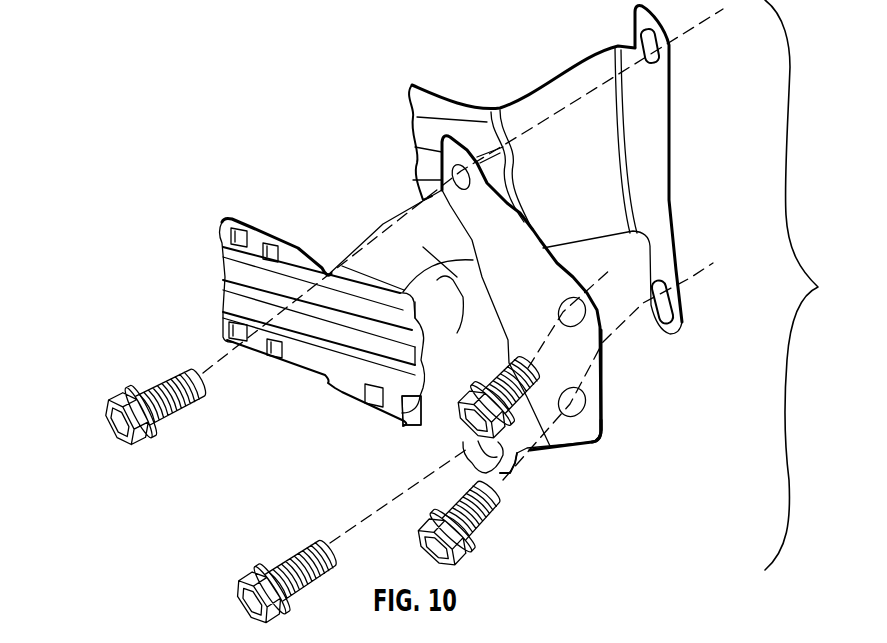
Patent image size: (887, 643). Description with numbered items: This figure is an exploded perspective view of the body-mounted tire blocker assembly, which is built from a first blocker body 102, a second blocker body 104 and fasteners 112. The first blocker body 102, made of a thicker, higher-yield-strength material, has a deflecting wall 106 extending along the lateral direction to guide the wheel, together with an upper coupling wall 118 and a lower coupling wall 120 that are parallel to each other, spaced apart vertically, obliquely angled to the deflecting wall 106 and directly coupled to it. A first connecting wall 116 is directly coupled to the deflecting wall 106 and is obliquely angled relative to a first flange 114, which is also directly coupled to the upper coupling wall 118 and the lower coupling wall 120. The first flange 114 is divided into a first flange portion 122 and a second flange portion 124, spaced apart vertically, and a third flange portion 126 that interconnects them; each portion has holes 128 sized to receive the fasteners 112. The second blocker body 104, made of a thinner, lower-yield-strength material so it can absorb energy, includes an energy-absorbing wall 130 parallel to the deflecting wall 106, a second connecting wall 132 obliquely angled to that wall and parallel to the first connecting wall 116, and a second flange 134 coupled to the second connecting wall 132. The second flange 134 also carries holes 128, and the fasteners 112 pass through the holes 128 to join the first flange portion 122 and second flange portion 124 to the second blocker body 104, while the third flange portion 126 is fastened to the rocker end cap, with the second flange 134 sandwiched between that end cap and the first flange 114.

The first blocker body 102 is at (592, 443).
The second blocker body 104 is at (673, 186).
The deflecting wall 106 is at (222, 340).
The fastener 112 is at (103, 285).
The first flange 114 is at (592, 443).
The first connecting wall 116 is at (448, 334).
The upper coupling wall 118 is at (383, 233).
The lower coupling wall 120 is at (398, 426).
The first flange portion 122 is at (482, 158).
The second flange portion 124 is at (502, 477).
The third flange portion 126 is at (605, 393).
The holes 128 is at (412, 88).
The energy-absorbing wall 130 is at (435, 92).
The second connecting wall 132 is at (580, 184).
The second flange 134 is at (634, 103).